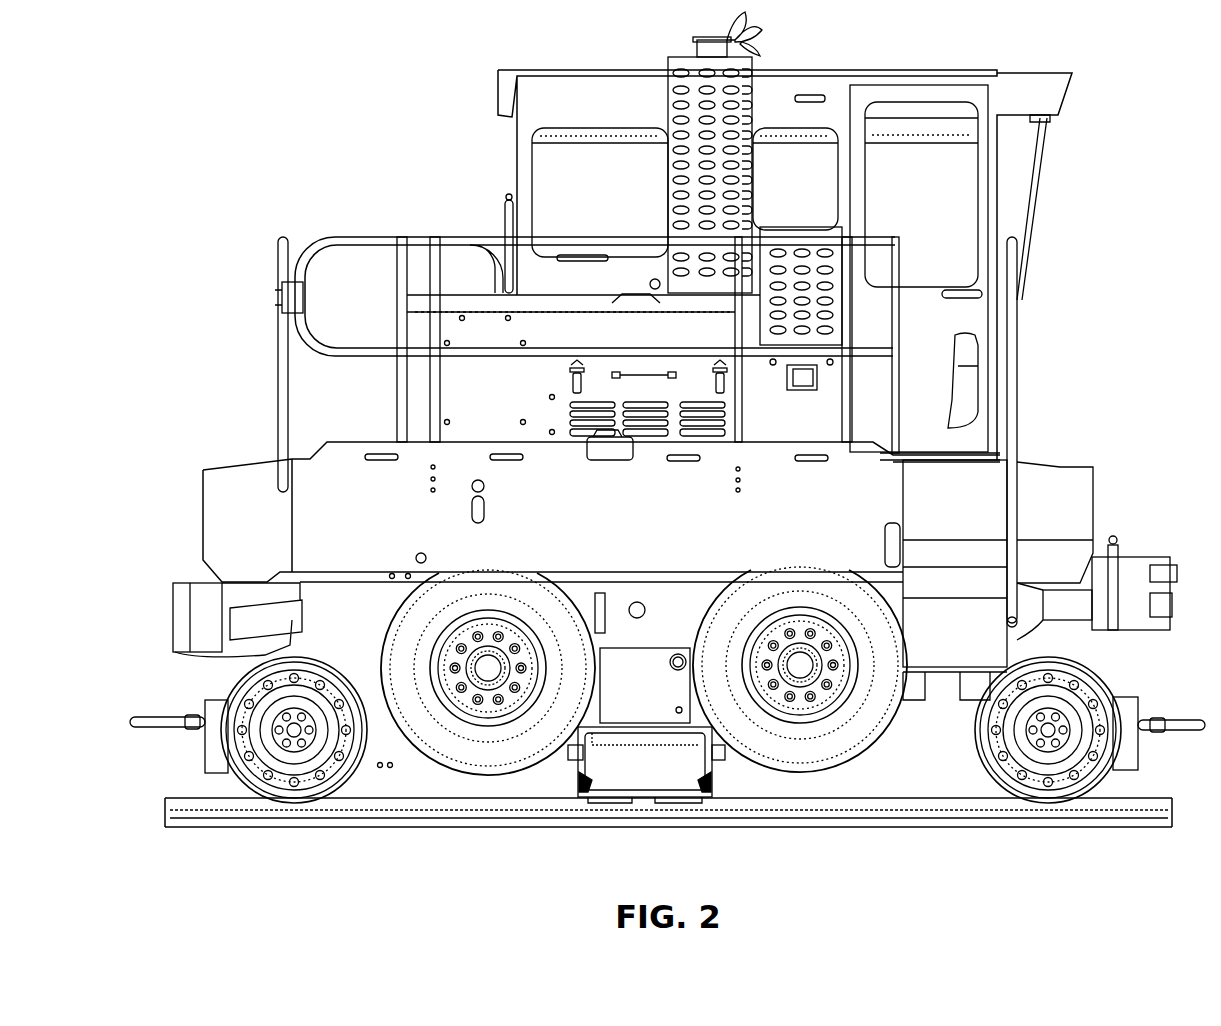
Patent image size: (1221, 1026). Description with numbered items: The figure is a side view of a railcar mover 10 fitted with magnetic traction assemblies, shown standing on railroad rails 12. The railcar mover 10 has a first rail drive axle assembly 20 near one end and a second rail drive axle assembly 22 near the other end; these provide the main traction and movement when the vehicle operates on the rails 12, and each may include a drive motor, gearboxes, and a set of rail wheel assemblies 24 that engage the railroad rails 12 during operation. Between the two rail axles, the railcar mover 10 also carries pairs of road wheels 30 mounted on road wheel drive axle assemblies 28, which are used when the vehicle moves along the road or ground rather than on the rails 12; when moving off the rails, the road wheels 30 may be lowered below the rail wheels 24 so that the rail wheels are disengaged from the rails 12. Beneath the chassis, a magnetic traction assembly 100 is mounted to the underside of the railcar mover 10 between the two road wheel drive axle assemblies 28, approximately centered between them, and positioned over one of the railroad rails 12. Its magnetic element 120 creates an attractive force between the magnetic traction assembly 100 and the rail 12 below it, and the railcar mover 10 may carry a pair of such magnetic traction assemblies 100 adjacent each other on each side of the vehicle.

The railcar mover 10 is at (222, 478).
The railroad rails 12 is at (190, 803).
The first rail drive axle assembly 20 is at (255, 722).
The second rail drive axle assembly 22 is at (1075, 710).
The rail wheel assemblies 24 is at (290, 790).
The road wheel drive axle assemblies 28 is at (485, 662).
The road wheels 30 is at (483, 752).
The magnetic traction assembly 100 is at (580, 785).
The magnetic element 120 is at (590, 792).